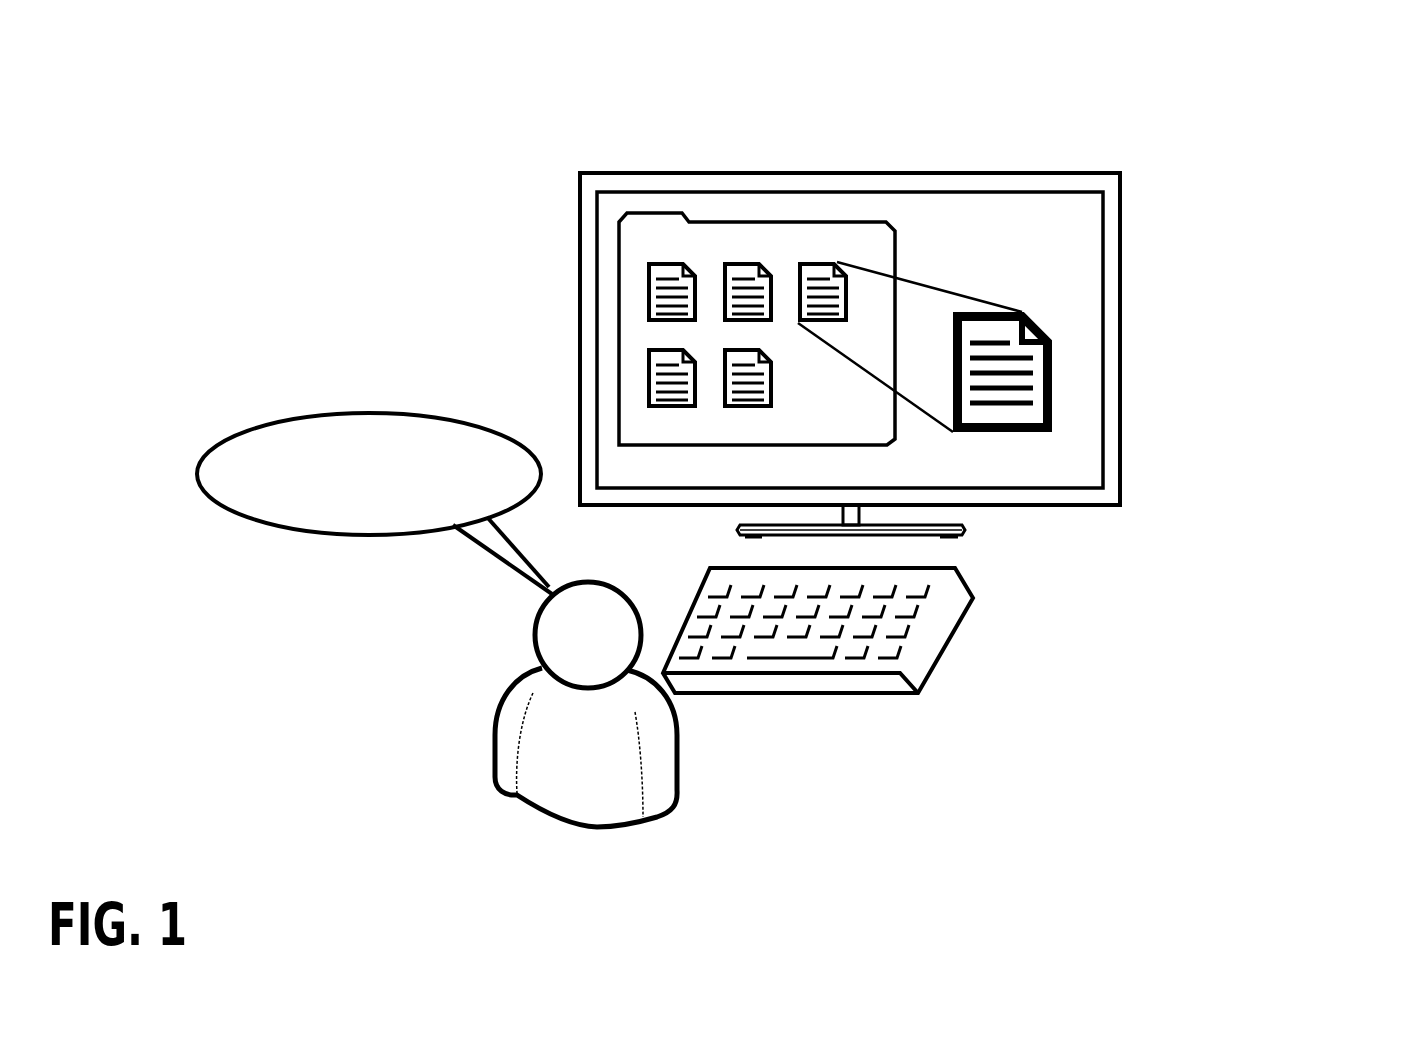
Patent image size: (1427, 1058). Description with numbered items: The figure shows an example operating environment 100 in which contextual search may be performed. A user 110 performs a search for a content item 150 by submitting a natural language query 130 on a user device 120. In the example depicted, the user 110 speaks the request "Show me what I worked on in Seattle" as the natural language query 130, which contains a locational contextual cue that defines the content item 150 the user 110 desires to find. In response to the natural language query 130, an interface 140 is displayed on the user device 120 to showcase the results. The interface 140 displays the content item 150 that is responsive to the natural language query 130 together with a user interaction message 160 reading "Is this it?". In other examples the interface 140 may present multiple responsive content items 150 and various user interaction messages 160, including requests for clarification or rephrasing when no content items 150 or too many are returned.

The operating environment 100 is at (1347, 149).
The user 110 is at (586, 721).
The user device 120 is at (1122, 207).
The natural language query 130 is at (287, 420).
The interface 140 is at (758, 207).
The content item 150 is at (1052, 370).
The user interaction message 160 is at (1049, 273).